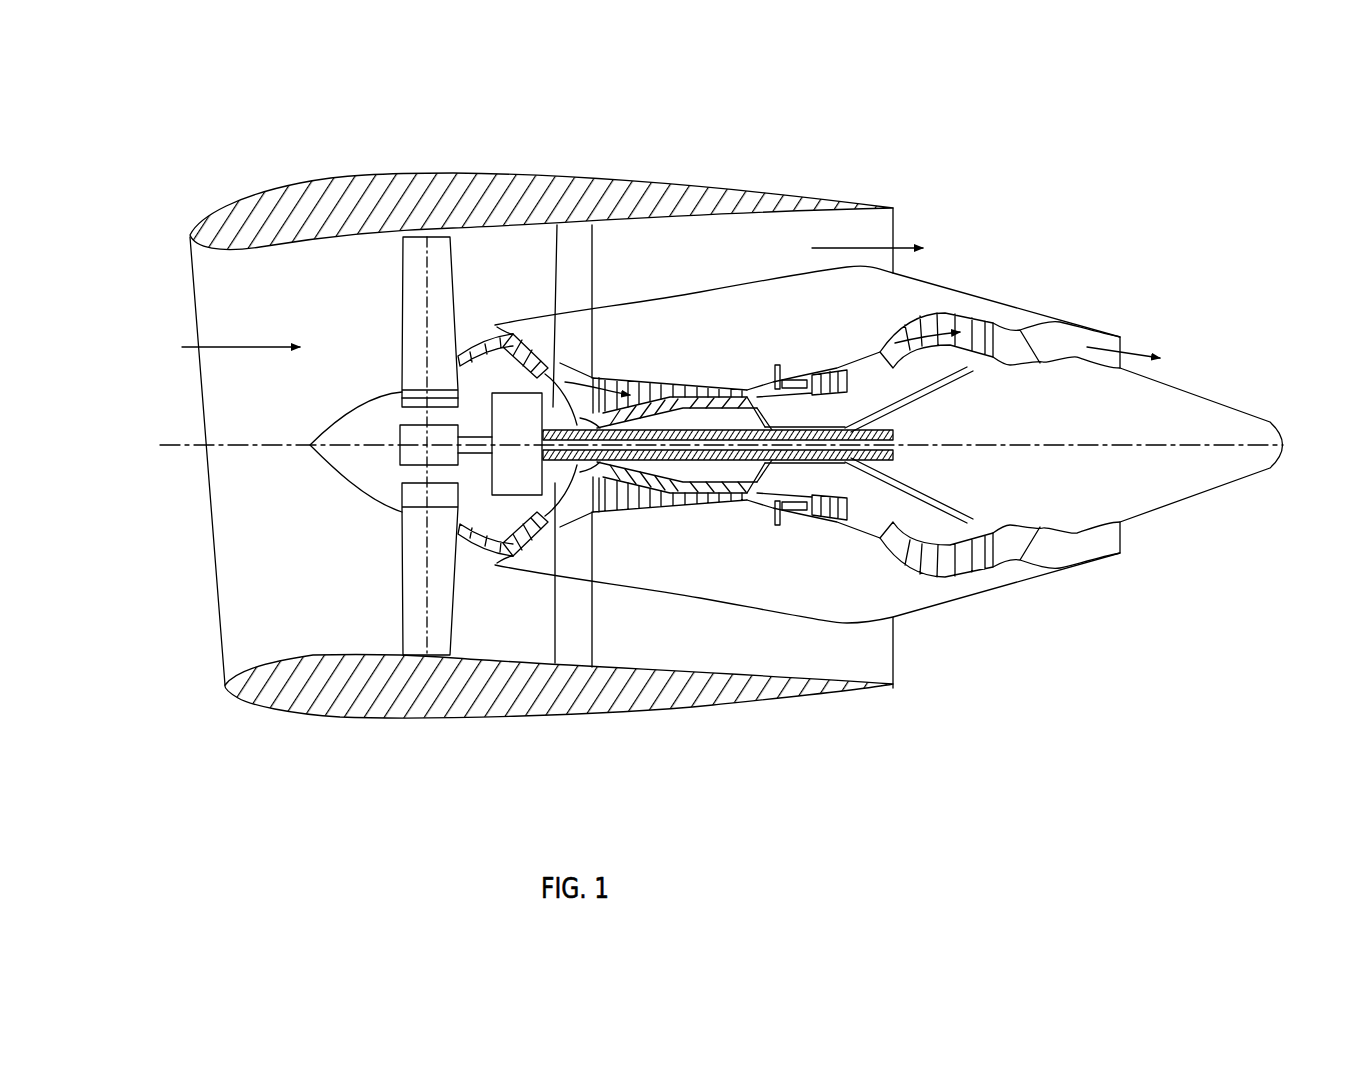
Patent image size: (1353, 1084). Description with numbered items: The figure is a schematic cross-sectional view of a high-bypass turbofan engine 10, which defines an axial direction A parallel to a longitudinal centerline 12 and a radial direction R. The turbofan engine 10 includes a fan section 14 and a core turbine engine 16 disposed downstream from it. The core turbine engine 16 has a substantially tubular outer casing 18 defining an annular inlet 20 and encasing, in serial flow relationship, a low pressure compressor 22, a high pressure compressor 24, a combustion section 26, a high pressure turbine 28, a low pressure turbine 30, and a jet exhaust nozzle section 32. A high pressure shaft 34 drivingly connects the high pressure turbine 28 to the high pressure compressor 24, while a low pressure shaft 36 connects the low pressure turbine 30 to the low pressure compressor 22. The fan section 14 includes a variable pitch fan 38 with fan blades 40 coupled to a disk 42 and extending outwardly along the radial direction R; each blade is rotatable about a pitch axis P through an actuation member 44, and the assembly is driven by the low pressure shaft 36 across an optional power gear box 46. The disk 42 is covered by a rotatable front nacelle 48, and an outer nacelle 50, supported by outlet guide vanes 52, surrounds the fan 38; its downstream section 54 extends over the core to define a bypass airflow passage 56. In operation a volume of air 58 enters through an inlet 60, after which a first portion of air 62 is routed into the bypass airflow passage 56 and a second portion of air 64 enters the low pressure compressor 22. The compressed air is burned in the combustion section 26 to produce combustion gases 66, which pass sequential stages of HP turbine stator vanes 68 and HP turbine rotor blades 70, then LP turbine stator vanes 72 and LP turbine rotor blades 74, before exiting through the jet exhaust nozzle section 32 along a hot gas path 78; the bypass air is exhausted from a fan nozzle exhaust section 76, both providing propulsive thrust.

The turbofan engine 10 is at (1040, 183).
The longitudinal centerline 12 is at (1060, 445).
The fan section 14 is at (360, 252).
The core turbine engine 16 is at (765, 240).
The outer casing 18 is at (750, 610).
The annular inlet 20 is at (495, 553).
The low pressure compressor 22 is at (553, 525).
The high pressure compressor 24 is at (620, 510).
The combustion section 26 is at (792, 517).
The high pressure turbine 28 is at (858, 520).
The low pressure turbine 30 is at (978, 582).
The jet exhaust nozzle section 32 is at (1038, 560).
The high pressure shaft 34 is at (833, 408).
The low pressure shaft 36 is at (913, 407).
The variable pitch fan 38 is at (362, 505).
The fan blades 40 is at (400, 597).
The disk 42 is at (417, 398).
The actuation member 44 is at (400, 427).
The power gear box 46 is at (528, 408).
The rotatable front nacelle 48 is at (310, 445).
The outer nacelle 50 is at (448, 718).
The outlet guide vanes 52 is at (592, 257).
The downstream section 54 is at (837, 197).
The bypass airflow passage 56 is at (693, 273).
The volume of air 58 is at (243, 343).
The inlet 60 is at (220, 660).
The first portion of air 62 is at (857, 247).
The second portion of air 64 is at (542, 353).
The combustion gases 66 is at (940, 317).
The HP turbine stator vanes 68 is at (810, 512).
The HP turbine rotor blades 70 is at (850, 485).
The LP turbine stator vanes 72 is at (902, 557).
The LP turbine rotor blades 74 is at (912, 562).
The fan nozzle exhaust section 76 is at (882, 233).
The hot gas path 78 is at (880, 350).
The radial direction R is at (115, 312).
The axial direction A is at (505, 778).
The pitch axis P is at (428, 253).